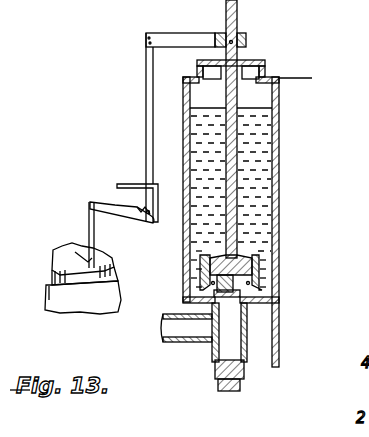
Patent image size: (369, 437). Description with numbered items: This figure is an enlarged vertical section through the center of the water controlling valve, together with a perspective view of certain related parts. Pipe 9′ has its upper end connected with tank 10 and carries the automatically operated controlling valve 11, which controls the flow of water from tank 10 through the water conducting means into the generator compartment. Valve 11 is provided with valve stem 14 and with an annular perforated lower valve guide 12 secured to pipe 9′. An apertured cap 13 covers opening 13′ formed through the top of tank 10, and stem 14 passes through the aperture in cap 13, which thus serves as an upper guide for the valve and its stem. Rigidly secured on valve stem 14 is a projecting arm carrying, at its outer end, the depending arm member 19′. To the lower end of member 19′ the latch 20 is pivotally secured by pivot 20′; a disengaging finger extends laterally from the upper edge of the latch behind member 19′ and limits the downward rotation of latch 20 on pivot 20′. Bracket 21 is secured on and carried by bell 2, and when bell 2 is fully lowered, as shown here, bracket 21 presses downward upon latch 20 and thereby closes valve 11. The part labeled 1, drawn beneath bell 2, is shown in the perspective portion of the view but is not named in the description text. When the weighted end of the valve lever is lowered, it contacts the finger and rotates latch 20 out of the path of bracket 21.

The base block 1 is at (47, 302).
The bell 2 is at (53, 268).
The pipe 9′ is at (183, 341).
The tank 10 is at (183, 288).
The controlling valve 11 is at (203, 254).
The annular perforated lower valve guide 12 is at (254, 256).
The apertured cap 13 is at (253, 64).
The opening 13′ is at (262, 73).
The valve stem 14 is at (238, 25).
The depending arm member 19′ is at (145, 124).
The latch 20 is at (117, 220).
The pivot 20′ is at (149, 221).
The bracket 21 is at (113, 202).